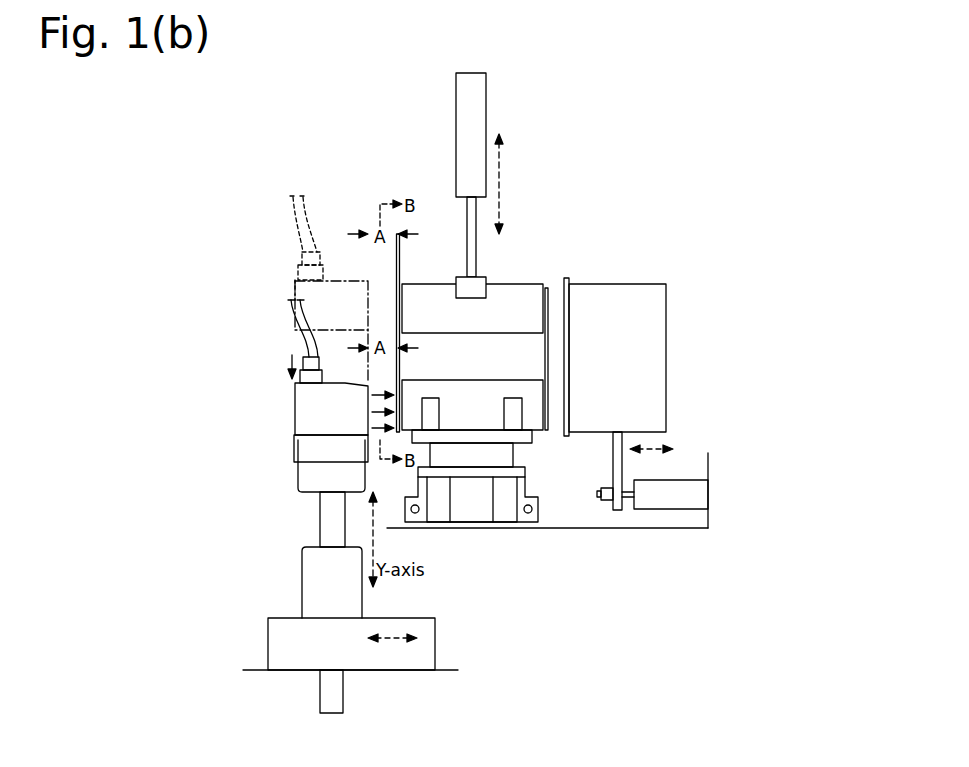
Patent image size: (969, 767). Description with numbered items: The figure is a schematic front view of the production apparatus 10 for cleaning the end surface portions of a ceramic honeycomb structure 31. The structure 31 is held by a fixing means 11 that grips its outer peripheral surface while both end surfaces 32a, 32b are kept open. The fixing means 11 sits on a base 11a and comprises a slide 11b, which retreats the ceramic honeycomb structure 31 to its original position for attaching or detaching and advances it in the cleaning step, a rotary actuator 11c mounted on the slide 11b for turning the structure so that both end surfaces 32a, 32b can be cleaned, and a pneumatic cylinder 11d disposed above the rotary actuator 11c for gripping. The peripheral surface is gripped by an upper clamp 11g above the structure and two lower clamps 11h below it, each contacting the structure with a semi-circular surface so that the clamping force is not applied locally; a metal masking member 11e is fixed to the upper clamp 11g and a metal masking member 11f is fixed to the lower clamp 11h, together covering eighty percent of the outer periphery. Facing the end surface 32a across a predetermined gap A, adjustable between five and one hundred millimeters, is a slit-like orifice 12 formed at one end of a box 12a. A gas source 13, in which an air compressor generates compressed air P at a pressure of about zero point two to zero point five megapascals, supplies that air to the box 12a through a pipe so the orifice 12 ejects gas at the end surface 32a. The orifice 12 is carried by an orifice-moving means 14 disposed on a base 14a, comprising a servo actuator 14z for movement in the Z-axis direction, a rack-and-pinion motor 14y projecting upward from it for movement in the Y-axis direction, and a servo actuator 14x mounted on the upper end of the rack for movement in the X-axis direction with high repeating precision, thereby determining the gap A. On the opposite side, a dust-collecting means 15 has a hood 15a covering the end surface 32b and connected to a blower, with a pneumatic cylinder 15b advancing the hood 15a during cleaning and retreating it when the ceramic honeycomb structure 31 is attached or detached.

The production apparatus 10 is at (268, 136).
The fixing means 11 is at (540, 186).
The base 11a is at (651, 530).
The slide 11b is at (490, 500).
The rotary actuator 11c is at (478, 410).
The pneumatic cylinder 11d is at (486, 102).
The masking member 11e is at (432, 289).
The masking member 11f is at (507, 455).
The upper clamp 11g is at (484, 281).
The lower clamp 11h is at (515, 413).
The slit-like orifice 12 is at (371, 404).
The box 12a is at (295, 412).
The gas source 13 is at (305, 347).
The orifice-moving means 14 is at (205, 456).
The base 14a is at (443, 672).
The servo actuator 14x is at (306, 482).
The rack-and-pinion motor 14y is at (312, 572).
The servo actuator 14z is at (272, 632).
The dust-collecting means 15 is at (684, 270).
The hood 15a is at (620, 294).
The pneumatic cylinder 15b is at (683, 482).
The ceramic honeycomb structure 31 is at (484, 370).
The end surface 32a is at (397, 313).
The end surface 32b is at (548, 300).